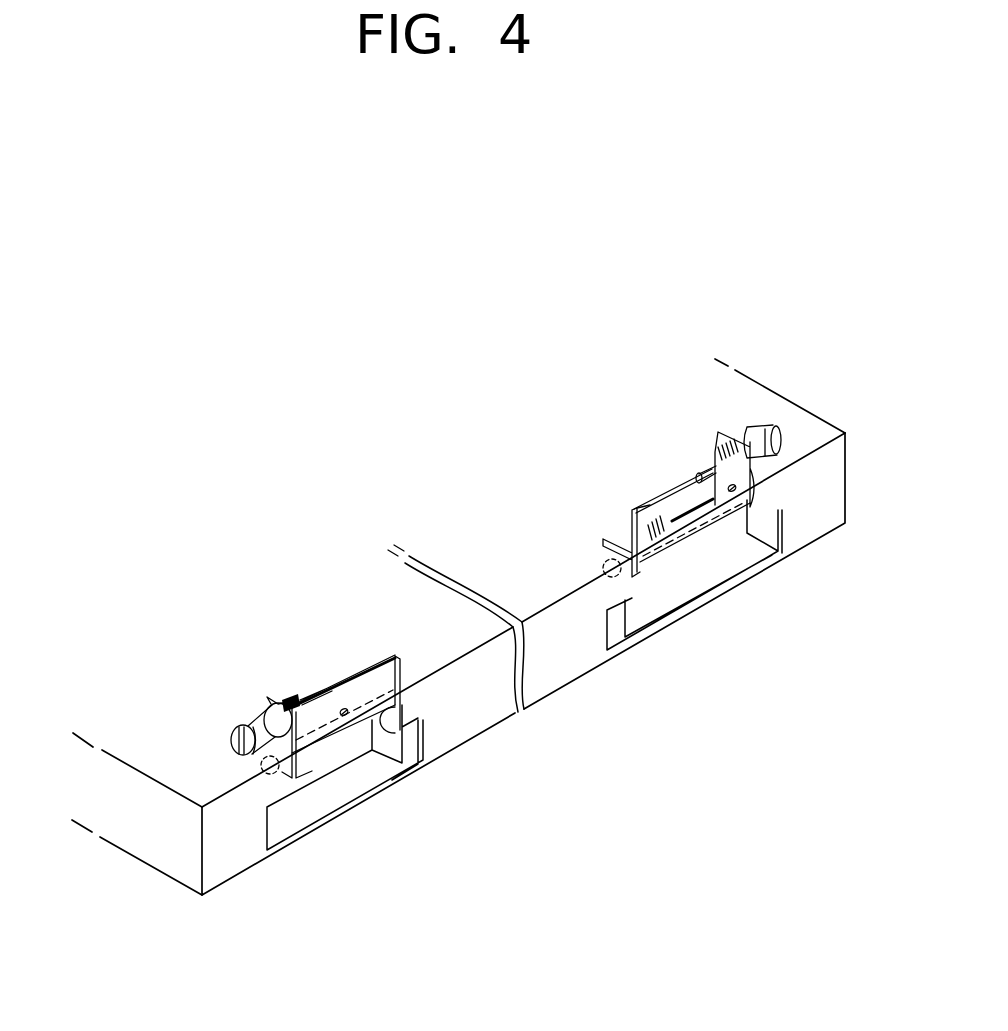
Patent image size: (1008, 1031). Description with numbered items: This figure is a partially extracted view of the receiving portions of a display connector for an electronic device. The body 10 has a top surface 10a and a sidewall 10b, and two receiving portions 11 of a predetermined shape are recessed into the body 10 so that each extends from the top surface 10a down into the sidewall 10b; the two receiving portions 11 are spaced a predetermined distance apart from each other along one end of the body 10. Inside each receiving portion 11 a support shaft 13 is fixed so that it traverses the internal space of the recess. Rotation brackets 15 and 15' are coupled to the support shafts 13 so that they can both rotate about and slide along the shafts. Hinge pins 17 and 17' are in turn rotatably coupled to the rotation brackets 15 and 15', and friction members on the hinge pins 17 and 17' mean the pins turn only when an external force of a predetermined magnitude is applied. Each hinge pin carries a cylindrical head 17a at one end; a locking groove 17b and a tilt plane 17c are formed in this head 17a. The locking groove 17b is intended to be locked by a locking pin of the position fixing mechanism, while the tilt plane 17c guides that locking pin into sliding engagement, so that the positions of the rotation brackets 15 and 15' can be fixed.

The body 10 is at (760, 364).
The top surface 10a is at (813, 430).
The sidewall 10b is at (838, 489).
The receiving portion 11 is at (367, 782).
The support shaft 13 is at (357, 703).
The rotation bracket 15 is at (623, 520).
The rotation bracket 15' is at (397, 671).
The hinge pin 17 is at (713, 436).
The hinge pin 17' is at (238, 700).
The cylindrical head 17a is at (240, 726).
The locking groove 17b is at (237, 752).
The tilt plane 17c is at (232, 733).